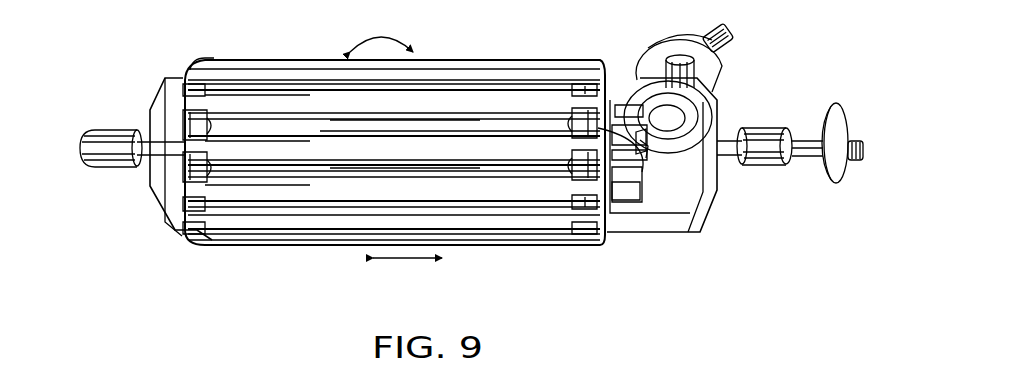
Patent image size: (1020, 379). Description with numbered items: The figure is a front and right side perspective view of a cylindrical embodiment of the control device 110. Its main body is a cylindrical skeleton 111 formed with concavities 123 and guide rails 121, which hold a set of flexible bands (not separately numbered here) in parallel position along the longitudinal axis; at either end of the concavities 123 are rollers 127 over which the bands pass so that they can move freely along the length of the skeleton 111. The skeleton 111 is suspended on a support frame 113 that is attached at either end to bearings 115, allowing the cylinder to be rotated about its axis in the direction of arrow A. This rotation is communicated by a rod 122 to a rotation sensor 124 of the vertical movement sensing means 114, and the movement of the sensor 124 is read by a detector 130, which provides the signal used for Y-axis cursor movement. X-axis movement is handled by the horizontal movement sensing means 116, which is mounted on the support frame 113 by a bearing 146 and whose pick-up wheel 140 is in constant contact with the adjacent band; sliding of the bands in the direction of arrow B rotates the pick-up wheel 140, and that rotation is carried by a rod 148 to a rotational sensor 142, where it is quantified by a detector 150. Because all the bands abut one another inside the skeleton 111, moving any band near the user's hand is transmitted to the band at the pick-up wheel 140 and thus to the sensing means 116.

The control device 110 is at (145, 68).
The cylindrical skeleton 111 is at (305, 57).
The support frame 113 is at (155, 113).
The vertical movement sensing means 114 is at (815, 100).
The bearings 115 is at (92, 129).
The horizontal movement sensing means 116 is at (632, 50).
The guide rails 121 is at (257, 150).
The rod 122 is at (812, 138).
The concavities 123 is at (464, 122).
The rotation sensor 124 is at (832, 110).
The rollers 127 is at (640, 190).
The detector 130 is at (866, 158).
The pick-up wheel 140 is at (678, 146).
The rotational sensor 142 is at (676, 32).
The bearing 146 is at (700, 88).
The rod 148 is at (693, 69).
The detector 150 is at (716, 30).